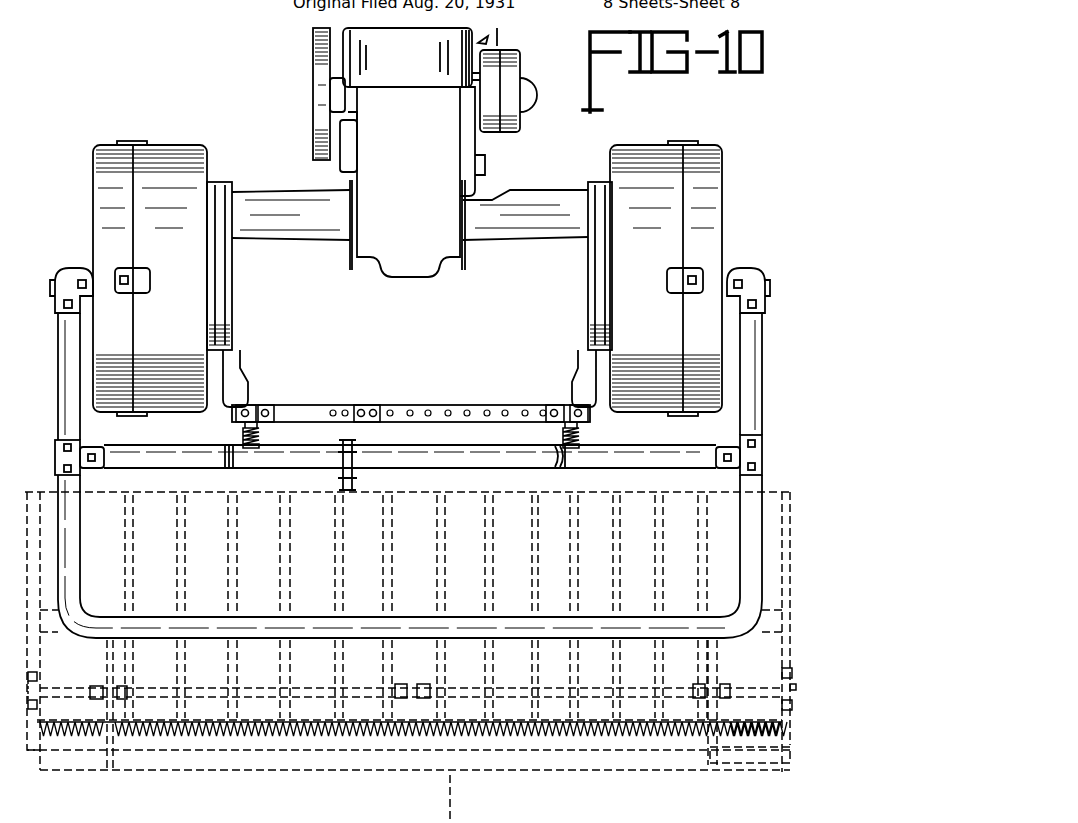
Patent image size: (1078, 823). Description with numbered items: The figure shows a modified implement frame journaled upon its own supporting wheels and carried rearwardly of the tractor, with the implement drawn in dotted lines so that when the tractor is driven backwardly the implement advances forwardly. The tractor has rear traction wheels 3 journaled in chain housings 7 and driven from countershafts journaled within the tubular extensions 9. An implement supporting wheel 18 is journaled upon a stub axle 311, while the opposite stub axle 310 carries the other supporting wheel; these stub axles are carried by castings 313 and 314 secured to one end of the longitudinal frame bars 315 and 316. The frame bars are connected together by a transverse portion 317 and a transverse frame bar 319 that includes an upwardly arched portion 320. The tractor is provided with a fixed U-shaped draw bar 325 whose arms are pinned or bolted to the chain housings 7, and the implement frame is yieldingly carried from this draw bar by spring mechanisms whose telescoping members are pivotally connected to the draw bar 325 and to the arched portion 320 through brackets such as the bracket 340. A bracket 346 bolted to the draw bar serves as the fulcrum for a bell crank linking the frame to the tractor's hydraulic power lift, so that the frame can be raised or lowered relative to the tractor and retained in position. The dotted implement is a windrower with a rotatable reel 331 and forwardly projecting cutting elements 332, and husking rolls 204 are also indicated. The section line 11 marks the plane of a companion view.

The rear traction wheels 3 is at (642, 152).
The chain housings 7 is at (218, 321).
The tubular extensions 9 is at (262, 212).
The section line 11 is at (230, 183).
The implement supporting wheel 18 is at (705, 157).
The husking rolls 204 is at (578, 633).
The stub axle 310 is at (92, 272).
The stub axle 311 is at (744, 278).
The casting 313 is at (58, 282).
The casting 314 is at (767, 278).
The longitudinal frame bar 315 is at (68, 404).
The longitudinal frame bar 316 is at (750, 403).
The transverse portion 317 is at (359, 628).
The transverse frame bar 319 is at (513, 440).
The upwardly arched portion 320 is at (442, 441).
The draw bar 325 is at (411, 400).
The rotatable reel 331 is at (628, 755).
The cutting elements 332 is at (553, 735).
The bracket 340 is at (246, 410).
The bracket 346 is at (365, 406).